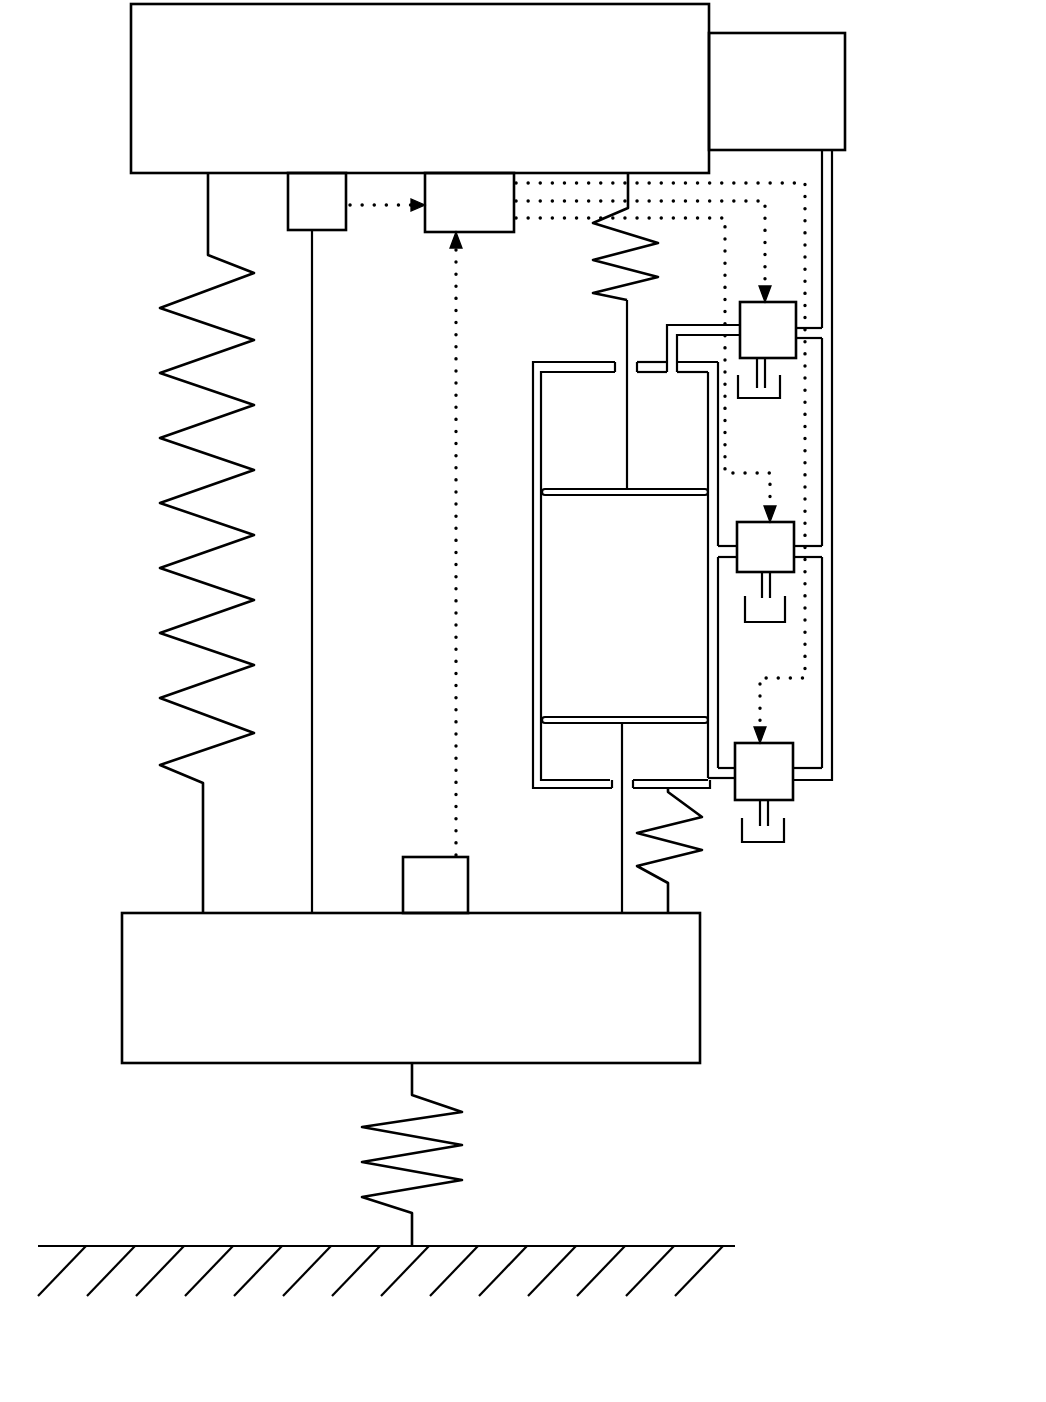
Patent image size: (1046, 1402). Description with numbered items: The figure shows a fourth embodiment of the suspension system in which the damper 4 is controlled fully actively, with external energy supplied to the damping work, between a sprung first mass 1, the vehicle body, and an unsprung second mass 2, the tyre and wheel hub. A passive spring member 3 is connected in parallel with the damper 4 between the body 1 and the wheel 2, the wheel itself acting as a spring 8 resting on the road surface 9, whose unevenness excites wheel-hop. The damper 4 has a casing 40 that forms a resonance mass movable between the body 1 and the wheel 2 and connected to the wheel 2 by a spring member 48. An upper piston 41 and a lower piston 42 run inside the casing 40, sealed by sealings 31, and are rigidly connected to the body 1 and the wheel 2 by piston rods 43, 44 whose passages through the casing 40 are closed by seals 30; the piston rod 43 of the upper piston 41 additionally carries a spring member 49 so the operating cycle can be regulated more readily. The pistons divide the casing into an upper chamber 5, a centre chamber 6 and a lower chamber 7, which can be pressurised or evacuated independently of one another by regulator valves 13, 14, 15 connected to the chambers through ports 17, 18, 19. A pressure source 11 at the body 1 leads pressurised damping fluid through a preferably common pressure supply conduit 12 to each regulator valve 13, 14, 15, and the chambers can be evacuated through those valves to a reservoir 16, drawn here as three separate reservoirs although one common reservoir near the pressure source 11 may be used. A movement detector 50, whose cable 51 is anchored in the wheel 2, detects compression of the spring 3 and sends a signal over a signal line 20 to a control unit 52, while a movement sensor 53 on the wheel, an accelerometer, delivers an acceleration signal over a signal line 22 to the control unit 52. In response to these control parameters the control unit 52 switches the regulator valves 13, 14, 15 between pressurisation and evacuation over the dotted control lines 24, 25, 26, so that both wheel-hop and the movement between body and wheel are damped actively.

The first mass 1 is at (420, 88).
The second mass 2 is at (411, 988).
The passive spring member 3 is at (176, 360).
The damper 4 is at (523, 340).
The upper chamber 5 is at (570, 448).
The centre chamber 6 is at (590, 598).
The lower chamber 7 is at (592, 750).
The spring 8 is at (430, 1140).
The road surface 9 is at (605, 1246).
The pressure source 11 is at (777, 91).
The pressure supply conduit 12 is at (820, 790).
The regulator valve 13 is at (768, 330).
The regulator valve 14 is at (765, 547).
The regulator valve 15 is at (764, 771).
The reservoir 16 is at (755, 398).
The upper port 17 is at (670, 375).
The middle port 18 is at (712, 555).
The lower port 19 is at (700, 766).
The signal line 20 is at (384, 212).
The signal line 22 is at (455, 702).
The control line 24 is at (765, 248).
The control line 25 is at (725, 302).
The control line 26 is at (805, 208).
The seal 30 is at (615, 362).
The sealing 31 is at (550, 493).
The casing 40 is at (532, 388).
The upper piston 41 is at (590, 478).
The lower piston 42 is at (592, 686).
The piston rod 43 is at (620, 303).
The piston rod 44 is at (620, 870).
The spring member 48 is at (670, 860).
The spring member 49 is at (608, 250).
The movement detector 50 is at (317, 201).
The cable 51 is at (318, 410).
The control unit 52 is at (469, 202).
The movement sensor 53 is at (435, 885).